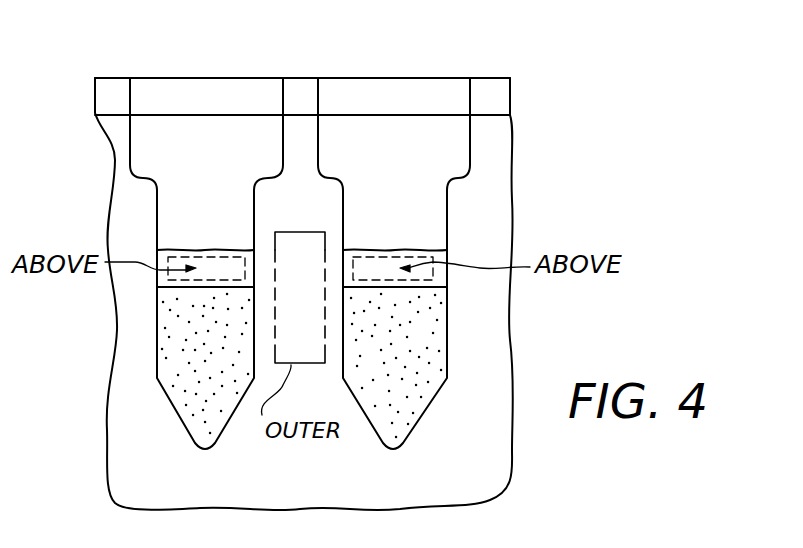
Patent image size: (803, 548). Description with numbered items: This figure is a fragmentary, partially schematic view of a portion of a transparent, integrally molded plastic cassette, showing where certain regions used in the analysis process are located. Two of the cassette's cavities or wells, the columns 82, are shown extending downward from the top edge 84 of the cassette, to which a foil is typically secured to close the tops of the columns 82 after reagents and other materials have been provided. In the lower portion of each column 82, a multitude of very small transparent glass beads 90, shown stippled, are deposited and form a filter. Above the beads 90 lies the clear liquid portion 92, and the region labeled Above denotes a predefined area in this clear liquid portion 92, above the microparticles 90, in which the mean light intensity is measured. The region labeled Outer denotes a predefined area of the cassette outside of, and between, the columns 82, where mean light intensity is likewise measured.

The top edge 84 is at (480, 78).
The columns 82 is at (155, 367).
The glass beads 90 is at (437, 345).
The clear liquid portion 92 is at (250, 252).